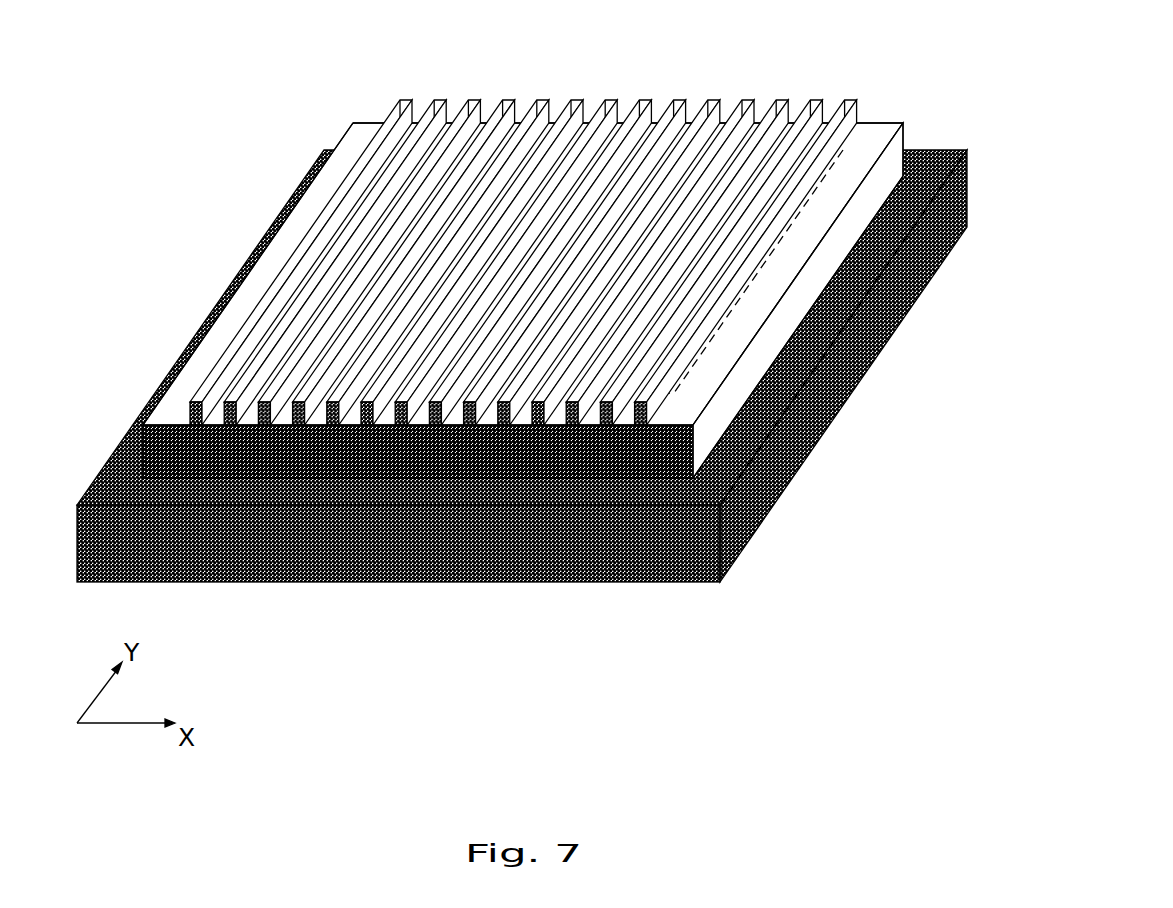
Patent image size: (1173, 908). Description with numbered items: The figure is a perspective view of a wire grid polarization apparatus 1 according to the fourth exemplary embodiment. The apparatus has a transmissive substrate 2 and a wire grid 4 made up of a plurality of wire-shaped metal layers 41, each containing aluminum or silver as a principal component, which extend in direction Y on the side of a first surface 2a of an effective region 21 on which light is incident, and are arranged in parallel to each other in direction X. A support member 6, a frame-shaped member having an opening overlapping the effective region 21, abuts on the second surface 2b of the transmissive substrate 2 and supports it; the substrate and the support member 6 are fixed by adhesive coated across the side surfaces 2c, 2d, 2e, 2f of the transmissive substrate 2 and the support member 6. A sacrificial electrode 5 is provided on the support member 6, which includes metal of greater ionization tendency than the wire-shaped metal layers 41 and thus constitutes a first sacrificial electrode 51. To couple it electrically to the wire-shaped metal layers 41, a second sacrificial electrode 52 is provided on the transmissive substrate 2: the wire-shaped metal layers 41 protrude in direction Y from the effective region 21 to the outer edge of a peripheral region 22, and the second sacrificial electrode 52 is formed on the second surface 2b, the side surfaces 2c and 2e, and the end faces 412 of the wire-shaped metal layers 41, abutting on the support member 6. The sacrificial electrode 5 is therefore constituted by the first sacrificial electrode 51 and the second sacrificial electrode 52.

The wire grid polarization apparatus 1 is at (258, 97).
The transmissive substrate 2 is at (528, 364).
The first surface 2a is at (741, 311).
The second surface 2b is at (710, 430).
The side surface 2c is at (403, 458).
The side surface 2d is at (745, 377).
The side surface 2e is at (905, 132).
The side surface 2f is at (142, 450).
The effective region 21 is at (807, 208).
The peripheral region 22 is at (792, 287).
The wire grid 4 is at (523, 339).
The wire-shaped metal layers 41 is at (523, 339).
The end faces 412 is at (582, 108).
The sacrificial electrode 5 is at (617, 675).
The first sacrificial electrode 51 is at (585, 562).
The second sacrificial electrode 52 is at (552, 457).
The support member 6 is at (522, 417).